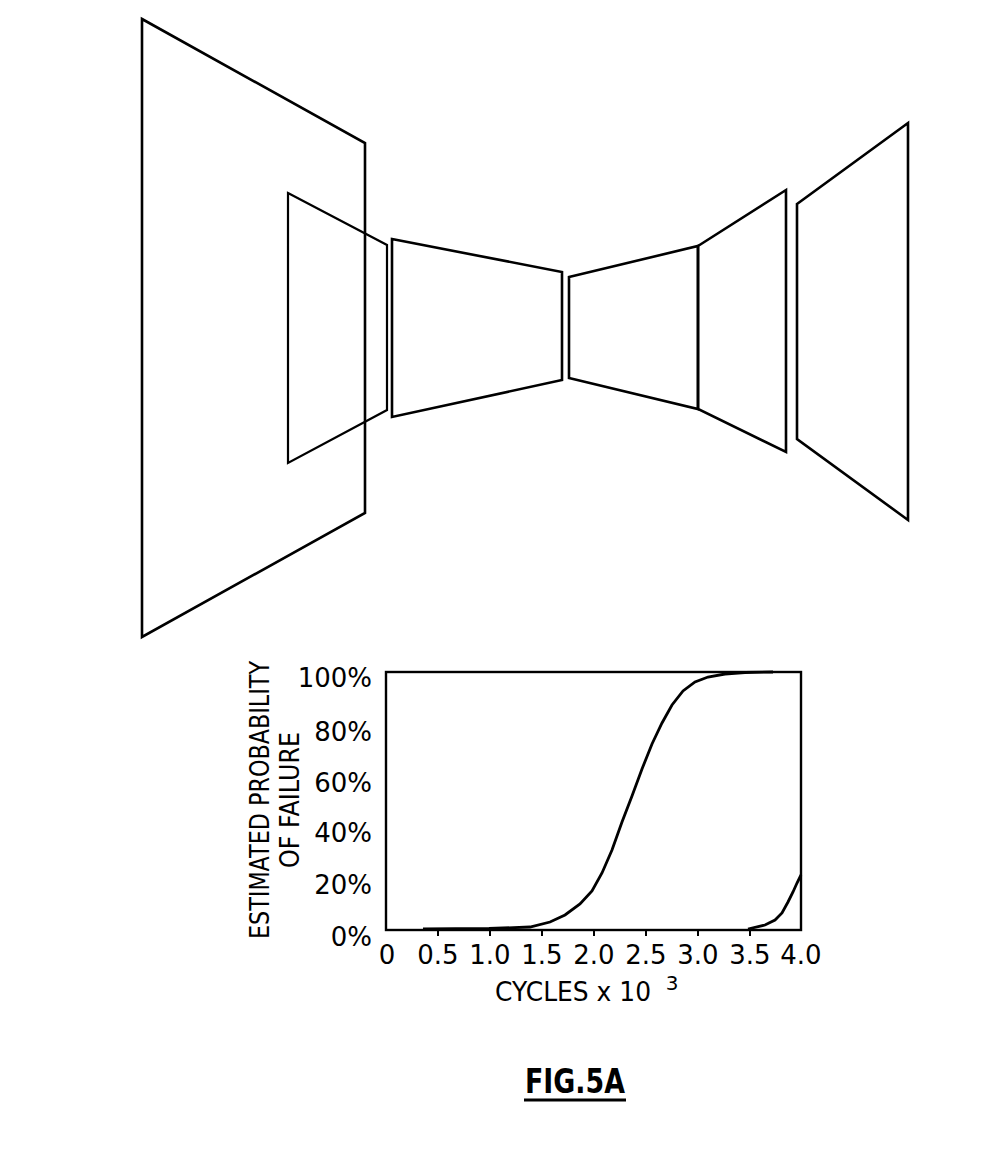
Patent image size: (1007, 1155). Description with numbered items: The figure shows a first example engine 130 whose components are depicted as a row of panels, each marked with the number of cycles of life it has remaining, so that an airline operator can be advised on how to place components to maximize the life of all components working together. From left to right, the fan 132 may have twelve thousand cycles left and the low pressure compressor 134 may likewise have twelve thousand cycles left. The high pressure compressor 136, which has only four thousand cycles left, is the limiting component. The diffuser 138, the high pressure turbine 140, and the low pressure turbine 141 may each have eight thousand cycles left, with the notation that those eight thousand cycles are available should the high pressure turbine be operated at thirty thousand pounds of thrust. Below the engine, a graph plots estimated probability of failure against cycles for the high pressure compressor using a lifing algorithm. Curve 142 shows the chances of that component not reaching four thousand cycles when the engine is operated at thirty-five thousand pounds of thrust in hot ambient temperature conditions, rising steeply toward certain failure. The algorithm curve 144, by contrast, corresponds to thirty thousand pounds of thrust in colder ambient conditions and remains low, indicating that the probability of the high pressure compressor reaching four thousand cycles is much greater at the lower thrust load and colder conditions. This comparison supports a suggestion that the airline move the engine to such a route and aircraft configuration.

The engine 130 is at (582, 202).
The fan 132 is at (158, 463).
The low pressure compressor 134 is at (343, 240).
The high pressure compressor 136 is at (420, 390).
The diffuser 138 is at (655, 383).
The high pressure turbine 140 is at (752, 420).
The low pressure turbine 141 is at (862, 473).
The curve 142 is at (641, 771).
The algorithm curve 144 is at (798, 890).